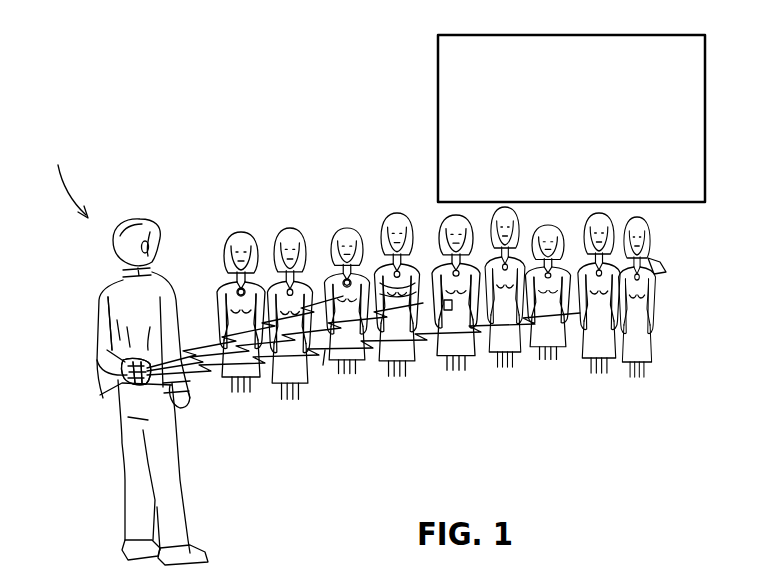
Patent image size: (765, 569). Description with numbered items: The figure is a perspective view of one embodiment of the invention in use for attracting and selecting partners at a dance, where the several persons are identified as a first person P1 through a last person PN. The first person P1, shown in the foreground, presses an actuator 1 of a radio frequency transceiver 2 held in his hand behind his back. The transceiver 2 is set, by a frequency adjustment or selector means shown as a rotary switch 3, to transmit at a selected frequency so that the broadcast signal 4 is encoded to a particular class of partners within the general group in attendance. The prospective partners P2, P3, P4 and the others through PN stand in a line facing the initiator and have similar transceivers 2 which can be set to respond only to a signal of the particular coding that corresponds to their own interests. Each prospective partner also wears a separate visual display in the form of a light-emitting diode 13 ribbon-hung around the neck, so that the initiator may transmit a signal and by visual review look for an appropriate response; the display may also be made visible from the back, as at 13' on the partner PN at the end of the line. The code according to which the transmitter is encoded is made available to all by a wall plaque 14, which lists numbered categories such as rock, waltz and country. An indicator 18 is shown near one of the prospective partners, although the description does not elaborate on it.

The actuator 1 is at (120, 353).
The radio frequency transceiver 2 is at (130, 370).
The rotary switch 3 is at (125, 377).
The broadcast signal 4 is at (323, 360).
The light-emitting diode 13 is at (290, 244).
The light-emitting diode display visible from the back 13' is at (692, 263).
The wall plaque 14 is at (437, 82).
The receiver indicator light 18 is at (437, 300).
The first person P1 is at (140, 214).
The prospective partner P2 is at (233, 234).
The prospective partner P3 is at (290, 230).
The prospective partner P4 is at (345, 230).
The nth prospective partner PN is at (652, 222).